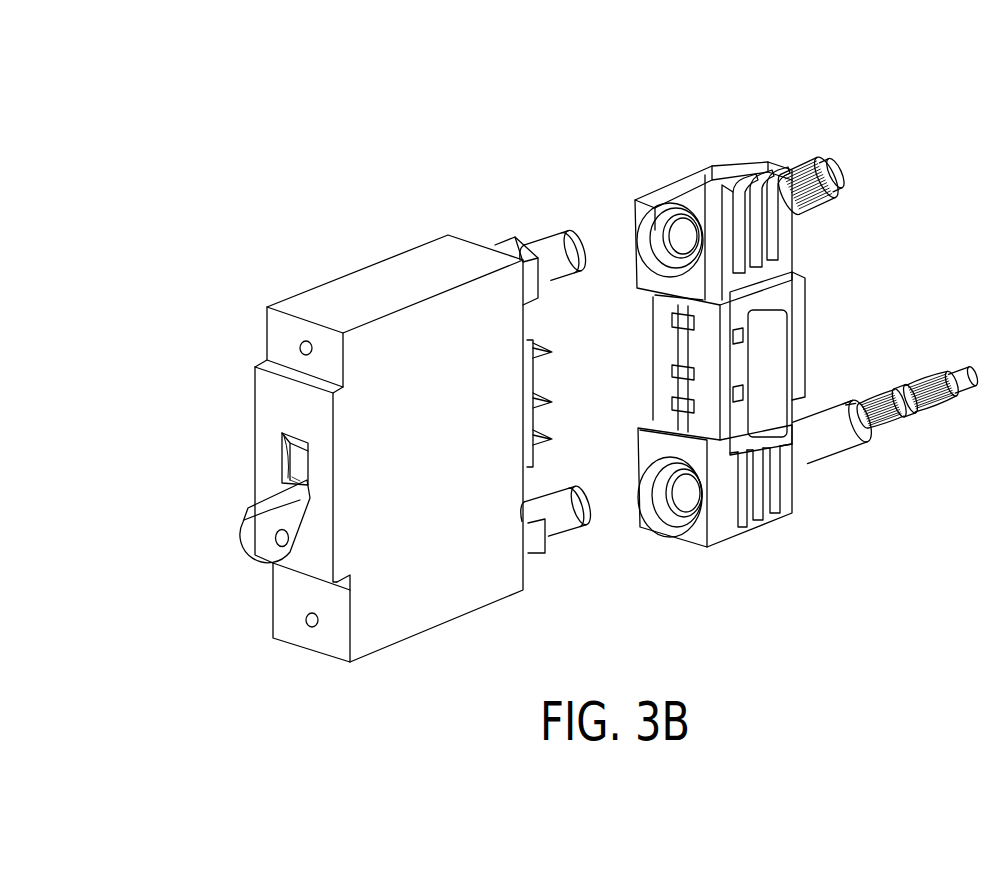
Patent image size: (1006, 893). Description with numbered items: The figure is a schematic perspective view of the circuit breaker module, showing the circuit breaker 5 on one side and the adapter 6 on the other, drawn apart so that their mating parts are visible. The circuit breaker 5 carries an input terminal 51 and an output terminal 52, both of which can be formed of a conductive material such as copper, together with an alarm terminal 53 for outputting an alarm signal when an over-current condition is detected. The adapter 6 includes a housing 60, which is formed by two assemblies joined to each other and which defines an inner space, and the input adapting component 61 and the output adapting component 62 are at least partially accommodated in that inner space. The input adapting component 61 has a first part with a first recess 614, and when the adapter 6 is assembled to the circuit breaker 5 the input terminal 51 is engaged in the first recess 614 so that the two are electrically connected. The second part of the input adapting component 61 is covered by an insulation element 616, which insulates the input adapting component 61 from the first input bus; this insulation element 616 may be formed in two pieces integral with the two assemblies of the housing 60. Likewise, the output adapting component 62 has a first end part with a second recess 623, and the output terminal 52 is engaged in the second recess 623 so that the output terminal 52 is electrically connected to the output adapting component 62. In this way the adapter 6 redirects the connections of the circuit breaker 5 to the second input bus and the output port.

The circuit breaker 5 is at (336, 268).
The input terminal 51 is at (562, 530).
The output terminal 52 is at (547, 248).
The alarm terminal 53 is at (546, 430).
The adapter 6 is at (685, 160).
The housing 60 is at (735, 170).
The input adapting component 61 is at (932, 405).
The output adapting component 62 is at (838, 166).
The first recess 614 is at (662, 510).
The insulation element 616 is at (835, 437).
The second recess 623 is at (637, 216).